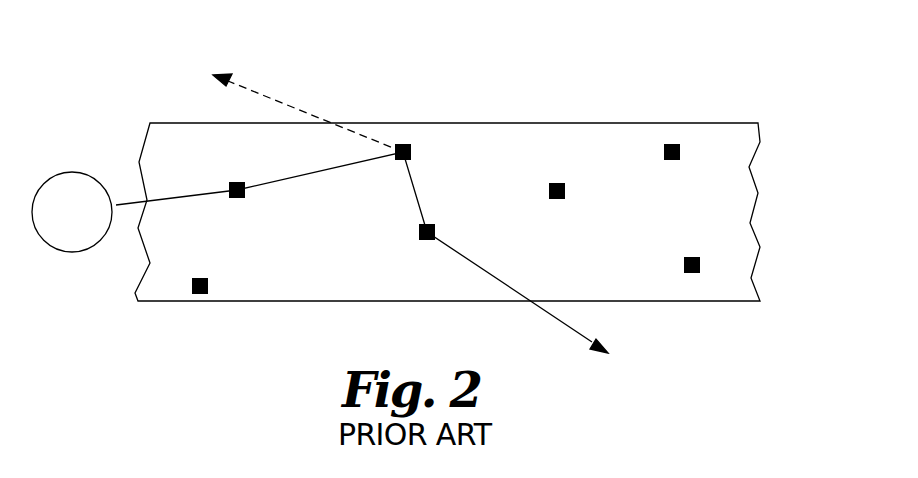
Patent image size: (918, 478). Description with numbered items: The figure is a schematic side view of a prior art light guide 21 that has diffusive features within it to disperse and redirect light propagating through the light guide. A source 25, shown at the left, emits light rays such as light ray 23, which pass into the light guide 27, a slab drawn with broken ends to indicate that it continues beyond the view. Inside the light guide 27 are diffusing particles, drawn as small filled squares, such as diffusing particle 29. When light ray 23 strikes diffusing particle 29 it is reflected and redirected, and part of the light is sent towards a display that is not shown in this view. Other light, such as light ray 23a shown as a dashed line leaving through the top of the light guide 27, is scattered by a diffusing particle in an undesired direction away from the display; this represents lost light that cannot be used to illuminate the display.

The prior art light guide 21 is at (479, 203).
The light ray 23 is at (555, 318).
The light ray 23a is at (250, 93).
The source 25 is at (68, 185).
The light guide 27 is at (740, 213).
The diffusing particle 29 is at (405, 145).